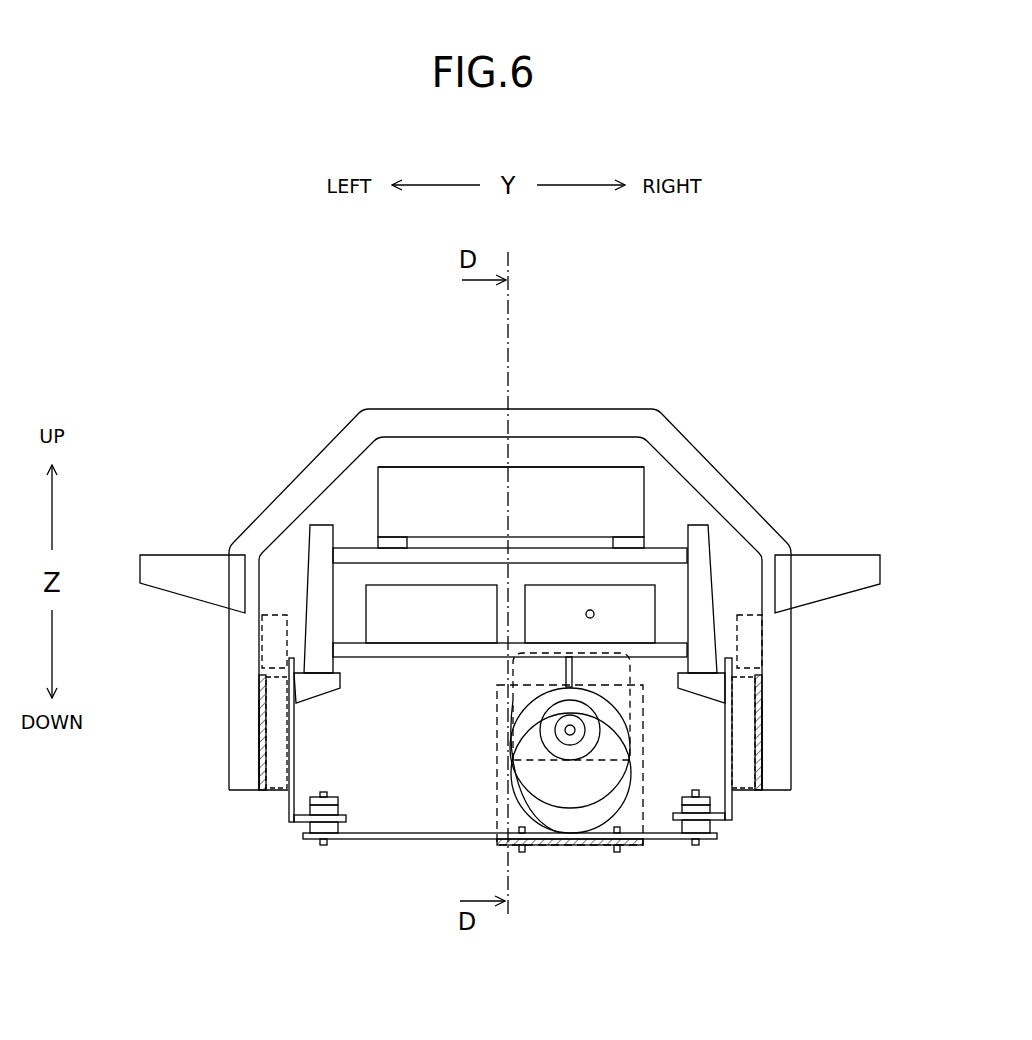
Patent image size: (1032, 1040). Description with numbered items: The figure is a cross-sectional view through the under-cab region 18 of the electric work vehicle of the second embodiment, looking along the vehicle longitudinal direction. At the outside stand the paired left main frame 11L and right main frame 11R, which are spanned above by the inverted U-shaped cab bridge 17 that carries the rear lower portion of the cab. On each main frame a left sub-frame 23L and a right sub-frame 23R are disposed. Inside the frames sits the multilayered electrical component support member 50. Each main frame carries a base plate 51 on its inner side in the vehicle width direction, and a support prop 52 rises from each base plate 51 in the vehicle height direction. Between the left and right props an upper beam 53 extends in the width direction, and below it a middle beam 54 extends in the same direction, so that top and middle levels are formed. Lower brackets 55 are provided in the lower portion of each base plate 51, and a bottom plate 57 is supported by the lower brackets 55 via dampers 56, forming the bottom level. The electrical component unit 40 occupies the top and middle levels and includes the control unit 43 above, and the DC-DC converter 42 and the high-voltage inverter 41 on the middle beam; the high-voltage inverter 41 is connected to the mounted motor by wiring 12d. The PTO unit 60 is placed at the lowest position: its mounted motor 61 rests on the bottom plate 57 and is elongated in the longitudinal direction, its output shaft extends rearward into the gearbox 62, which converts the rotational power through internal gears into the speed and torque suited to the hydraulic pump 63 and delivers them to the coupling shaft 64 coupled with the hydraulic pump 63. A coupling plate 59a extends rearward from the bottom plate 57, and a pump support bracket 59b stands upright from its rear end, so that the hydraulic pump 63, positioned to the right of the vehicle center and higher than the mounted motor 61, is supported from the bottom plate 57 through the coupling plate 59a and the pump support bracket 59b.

The cab bridge 17 is at (375, 408).
The under-cab region 18 is at (418, 450).
The left main frame 11L is at (258, 768).
The right main frame 11R is at (763, 765).
The electrical component support member 50 is at (357, 521).
The control unit 43 is at (572, 465).
The upper beam 53 is at (662, 547).
The middle beam 54 is at (668, 641).
The electrical component unit 40 is at (667, 328).
The DC-DC converter 42 is at (477, 584).
The high-voltage inverter 41 is at (590, 584).
The support prop 52 is at (327, 523).
The left sub-frame 23L is at (262, 641).
The right sub-frame 23R is at (763, 640).
The base plate 51 is at (280, 722).
The lower bracket 55 is at (294, 803).
The damper 56 is at (303, 828).
The bottom plate 57 is at (412, 842).
The coupling plate 59a is at (543, 847).
The pump support bracket 59b is at (497, 758).
The wiring 12d is at (575, 672).
The PTO unit 60 is at (578, 933).
The mounted motor 61 is at (635, 780).
The gearbox 62 is at (617, 790).
The hydraulic pump 63 is at (600, 764).
The coupling shaft 64 is at (567, 730).